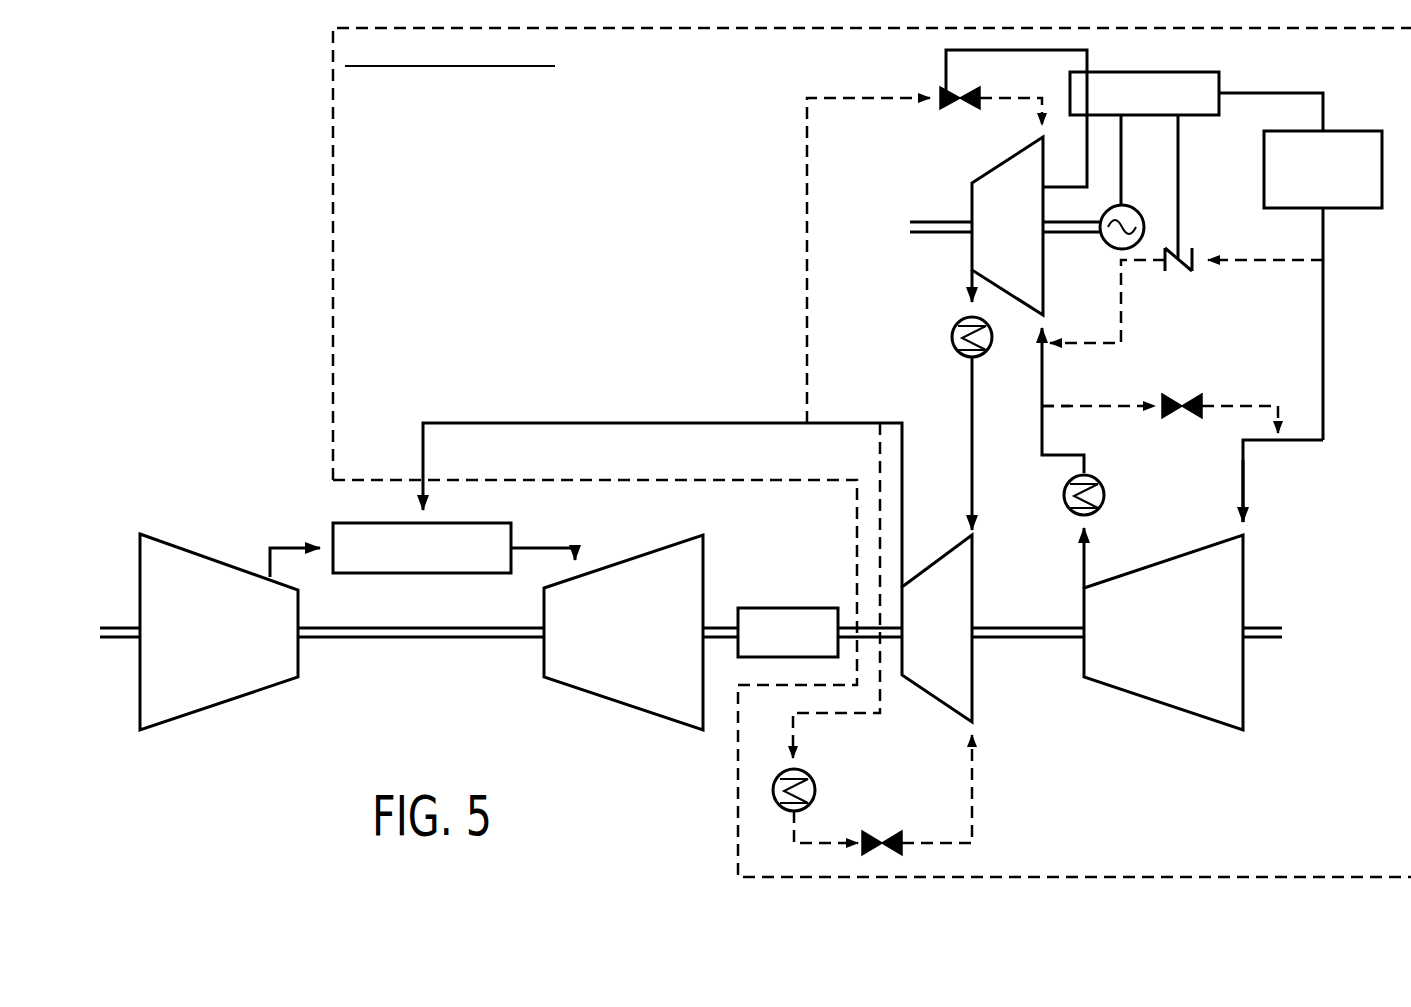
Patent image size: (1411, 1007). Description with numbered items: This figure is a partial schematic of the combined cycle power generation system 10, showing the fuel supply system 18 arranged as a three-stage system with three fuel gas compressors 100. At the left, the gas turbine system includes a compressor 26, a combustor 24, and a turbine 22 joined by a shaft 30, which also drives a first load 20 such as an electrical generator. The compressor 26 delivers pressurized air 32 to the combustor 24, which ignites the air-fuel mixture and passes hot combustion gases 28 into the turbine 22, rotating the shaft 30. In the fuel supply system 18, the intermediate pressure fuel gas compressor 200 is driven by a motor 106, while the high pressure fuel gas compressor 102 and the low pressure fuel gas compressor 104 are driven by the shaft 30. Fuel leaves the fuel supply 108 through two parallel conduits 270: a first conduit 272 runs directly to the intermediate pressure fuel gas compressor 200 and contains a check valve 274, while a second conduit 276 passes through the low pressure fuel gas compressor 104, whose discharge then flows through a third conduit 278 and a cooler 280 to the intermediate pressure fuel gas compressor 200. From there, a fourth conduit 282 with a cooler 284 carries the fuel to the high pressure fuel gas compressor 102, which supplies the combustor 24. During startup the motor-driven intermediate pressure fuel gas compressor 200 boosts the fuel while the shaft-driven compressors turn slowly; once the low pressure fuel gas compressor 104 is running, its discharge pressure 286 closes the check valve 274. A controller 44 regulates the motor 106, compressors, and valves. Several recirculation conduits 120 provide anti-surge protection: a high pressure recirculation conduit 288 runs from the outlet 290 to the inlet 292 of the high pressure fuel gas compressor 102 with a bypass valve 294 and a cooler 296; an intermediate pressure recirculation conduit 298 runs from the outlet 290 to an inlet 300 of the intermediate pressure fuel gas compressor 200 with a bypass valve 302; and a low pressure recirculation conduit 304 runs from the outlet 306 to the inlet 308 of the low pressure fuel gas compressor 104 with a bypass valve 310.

The combined cycle power generation system 10 is at (198, 292).
The fuel supply system 18 is at (333, 253).
The first load 20 is at (785, 607).
The turbine 22 is at (623, 705).
The combustor 24 is at (455, 523).
The compressor 26 is at (215, 710).
The combustion gases 28 is at (542, 545).
The shaft 30 is at (420, 640).
The pressurized air 32 is at (298, 545).
The controller 44 is at (1145, 72).
The fuel gas compressors 100 is at (965, 165).
The high pressure fuel gas compressor 102 is at (945, 705).
The low pressure fuel gas compressor 104 is at (1245, 582).
The motor 106 is at (1104, 240).
The fuel supply 108 is at (1340, 131).
The recirculation conduits 120 is at (827, 112).
The intermediate pressure fuel gas compressor 200 is at (1012, 163).
The conduits 270 is at (1316, 310).
The first conduit 272 is at (1290, 260).
The check valve 274 is at (1200, 250).
The second conduit 276 is at (1312, 447).
The third conduit 278 is at (1040, 435).
The cooler 280 is at (1105, 497).
The fourth conduit 282 is at (953, 348).
The cooler 284 is at (1074, 404).
The discharge pressure 286 is at (1085, 360).
The high pressure fuel gas compressor recirculation conduit 288 is at (972, 805).
The outlet 290 is at (935, 475).
The inlet 292 is at (985, 733).
The bypass valve 294 is at (895, 836).
The cooler 296 is at (805, 772).
The intermediate pressure fuel gas compressor recirculation conduit 298 is at (806, 258).
The inlet 300 is at (1048, 162).
The bypass valve 302 is at (940, 88).
The low pressure fuel gas compressor recirculation conduit 304 is at (1243, 405).
The outlet 306 is at (1058, 440).
The inlet 308 is at (1265, 480).
The bypass valve 310 is at (1198, 398).